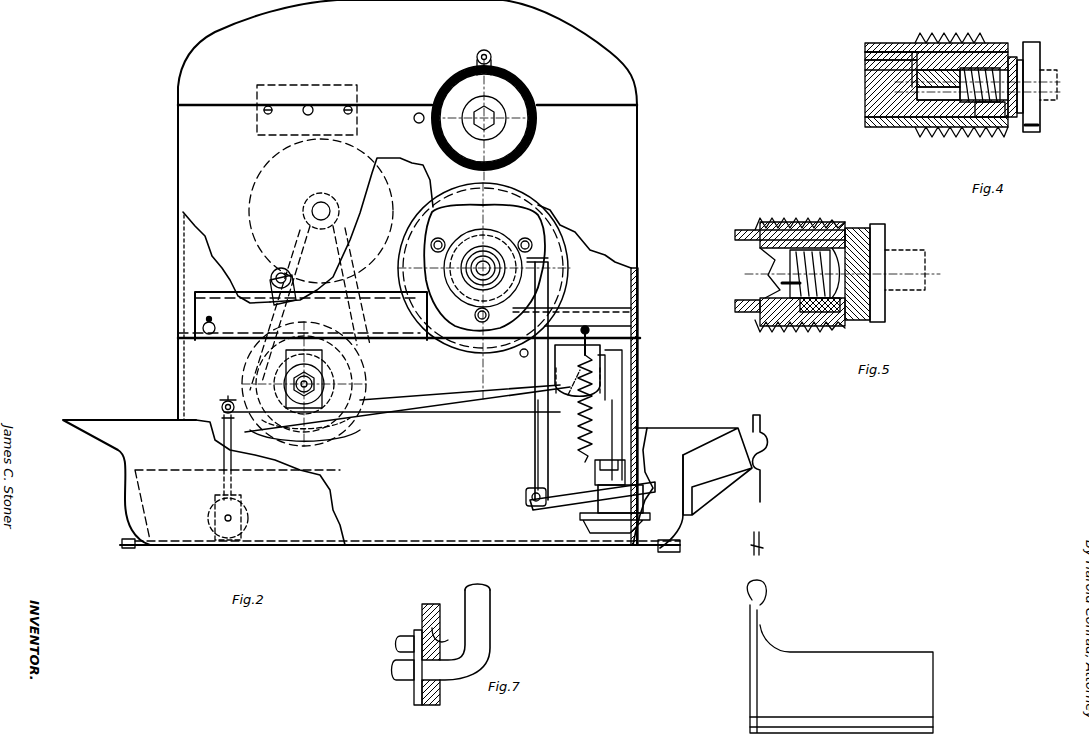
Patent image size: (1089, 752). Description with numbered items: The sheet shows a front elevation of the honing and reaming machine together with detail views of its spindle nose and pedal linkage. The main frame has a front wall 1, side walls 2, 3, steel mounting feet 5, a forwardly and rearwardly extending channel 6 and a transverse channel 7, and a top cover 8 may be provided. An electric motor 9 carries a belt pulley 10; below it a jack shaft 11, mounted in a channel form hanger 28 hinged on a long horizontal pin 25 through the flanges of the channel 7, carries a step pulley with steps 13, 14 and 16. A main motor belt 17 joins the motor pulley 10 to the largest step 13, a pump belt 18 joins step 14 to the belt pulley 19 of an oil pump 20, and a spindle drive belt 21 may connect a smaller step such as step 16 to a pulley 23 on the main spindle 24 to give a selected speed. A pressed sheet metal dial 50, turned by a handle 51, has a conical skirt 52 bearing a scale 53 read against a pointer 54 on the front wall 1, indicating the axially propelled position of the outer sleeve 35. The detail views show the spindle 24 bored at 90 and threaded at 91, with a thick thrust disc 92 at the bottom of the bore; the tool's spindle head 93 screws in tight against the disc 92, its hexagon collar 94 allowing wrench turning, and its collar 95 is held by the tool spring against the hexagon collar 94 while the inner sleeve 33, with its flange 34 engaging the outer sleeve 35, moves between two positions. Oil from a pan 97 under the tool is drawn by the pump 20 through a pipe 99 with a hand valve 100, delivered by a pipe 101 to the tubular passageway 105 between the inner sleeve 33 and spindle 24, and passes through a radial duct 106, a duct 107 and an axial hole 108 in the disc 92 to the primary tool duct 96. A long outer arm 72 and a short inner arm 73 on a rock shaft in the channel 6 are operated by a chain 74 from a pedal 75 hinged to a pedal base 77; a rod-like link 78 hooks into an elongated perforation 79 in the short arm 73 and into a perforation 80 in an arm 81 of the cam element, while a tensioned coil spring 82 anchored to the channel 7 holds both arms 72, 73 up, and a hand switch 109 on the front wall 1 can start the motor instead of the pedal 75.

In FIG. 2, the front wall 1 is at (630, 174).
In FIG. 2, the side wall 2 is at (178, 256).
In FIG. 2, the side wall 3 is at (639, 285).
In FIG. 2, the mounting feet 5 is at (128, 548).
In FIG. 2, the frame channel 6 is at (618, 468).
In FIG. 2, the transverse channel 7 is at (622, 324).
In FIG. 2, the top cover 8 is at (637, 82).
In FIG. 2, the electric motor 9 is at (264, 160).
In FIG. 2, the belt pulley 10 is at (304, 200).
In FIG. 2, the jack shaft 11 is at (290, 384).
In FIG. 2, the pulley step 13 is at (325, 440).
In FIG. 2, the pulley step 14 is at (305, 428).
In FIG. 2, the pulley step 16 is at (355, 372).
In FIG. 2, the main motor belt 17 is at (300, 225).
In FIG. 2, the pump belt 18 is at (393, 424).
In FIG. 2, the belt pulley 19 is at (579, 360).
In FIG. 2, the oil pump 20 is at (577, 370).
In FIG. 2, the spindle drive belt 21 is at (430, 370).
In FIG. 2, the pulley 23 is at (535, 193).
In FIG. 2, the main spindle 24 is at (484, 262).
In FIG. 4, the main spindle 24 is at (866, 88).
In FIG. 5, the main spindle 24 is at (762, 240).
In FIG. 2, the horizontal pin 25 is at (213, 326).
In FIG. 2, the hanger 28 is at (268, 357).
In FIG. 4, the inner sleeve 33 is at (872, 43).
In FIG. 5, the inner sleeve 33 is at (748, 230).
In FIG. 4, the flange 34 is at (1010, 48).
In FIG. 5, the flange 34 is at (852, 228).
In FIG. 4, the outer sleeve 35 is at (938, 33).
In FIG. 5, the outer sleeve 35 is at (785, 228).
In FIG. 2, the dial 50 is at (514, 88).
In FIG. 2, the handle 51 is at (491, 58).
In FIG. 2, the conical skirt 52 is at (535, 128).
In FIG. 2, the scale 53 is at (530, 147).
In FIG. 2, the scale pointer 54 is at (418, 121).
In FIG. 2, the long outer arm 72 is at (752, 480).
In FIG. 2, the short inner arm 73 is at (562, 492).
In FIG. 7, the short inner arm 73 is at (440, 689).
In FIG. 2, the chain 74 is at (762, 520).
In FIG. 2, the pedal 75 is at (802, 658).
In FIG. 2, the pedal base 77 is at (873, 722).
In FIG. 2, the link 78 is at (536, 449).
In FIG. 7, the link 78 is at (492, 596).
In FIG. 2, the perforation 79 is at (525, 489).
In FIG. 7, the perforation 79 is at (447, 633).
In FIG. 2, the perforation 80 is at (549, 264).
In FIG. 2, the arm 81 is at (542, 258).
In FIG. 2, the coil spring 82 is at (583, 442).
In FIG. 4, the bore 90 is at (963, 36).
In FIG. 5, the bore 90 is at (775, 263).
In FIG. 4, the thread 91 is at (985, 128).
In FIG. 5, the thread 91 is at (812, 314).
In FIG. 4, the thrust disc 92 is at (882, 128).
In FIG. 4, the spindle head 93 is at (955, 138).
In FIG. 5, the spindle head 93 is at (778, 282).
In FIG. 4, the hexagon collar 94 is at (1020, 58).
In FIG. 5, the hexagon collar 94 is at (842, 312).
In FIG. 4, the collar 95 is at (1040, 46).
In FIG. 5, the collar 95 is at (890, 232).
In FIG. 4, the primary tool duct 96 is at (1045, 105).
In FIG. 2, the pan 97 is at (125, 455).
In FIG. 2, the pipe 99 is at (232, 447).
In FIG. 2, the hand valve 100 is at (222, 407).
In FIG. 2, the pipe 101 is at (520, 355).
In FIG. 4, the tubular passageway 105 is at (905, 43).
In FIG. 4, the radial duct 106 is at (866, 58).
In FIG. 4, the duct 107 is at (866, 70).
In FIG. 4, the axial hole 108 is at (866, 118).
In FIG. 2, the hand switch 109 is at (306, 116).